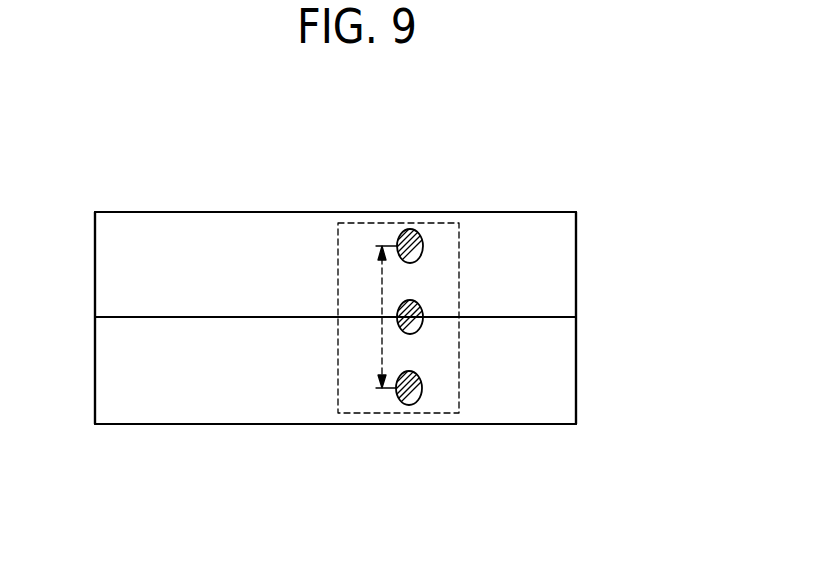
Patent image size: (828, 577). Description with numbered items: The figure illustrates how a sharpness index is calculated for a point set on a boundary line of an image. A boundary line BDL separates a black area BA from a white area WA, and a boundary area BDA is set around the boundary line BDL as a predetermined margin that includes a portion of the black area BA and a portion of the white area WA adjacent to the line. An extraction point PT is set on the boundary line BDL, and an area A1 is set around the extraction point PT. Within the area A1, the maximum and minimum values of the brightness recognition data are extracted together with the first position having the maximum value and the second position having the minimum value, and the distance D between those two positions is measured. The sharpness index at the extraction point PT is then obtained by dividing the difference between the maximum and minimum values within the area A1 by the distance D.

The boundary area BDA is at (310, 135).
The boundary line BDL is at (131, 316).
The black area BA is at (576, 266).
The white area WA is at (576, 355).
The area A1 is at (460, 380).
The distance D is at (380, 317).
The extraction point PT is at (418, 300).